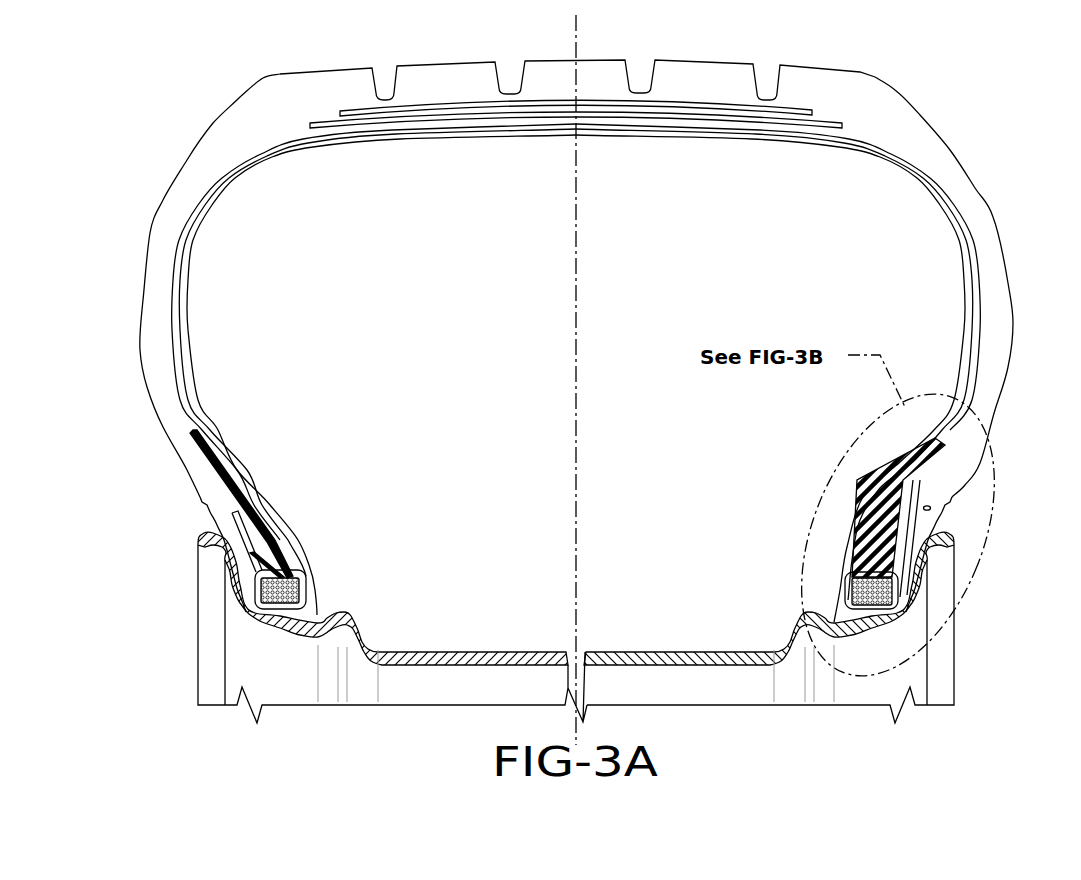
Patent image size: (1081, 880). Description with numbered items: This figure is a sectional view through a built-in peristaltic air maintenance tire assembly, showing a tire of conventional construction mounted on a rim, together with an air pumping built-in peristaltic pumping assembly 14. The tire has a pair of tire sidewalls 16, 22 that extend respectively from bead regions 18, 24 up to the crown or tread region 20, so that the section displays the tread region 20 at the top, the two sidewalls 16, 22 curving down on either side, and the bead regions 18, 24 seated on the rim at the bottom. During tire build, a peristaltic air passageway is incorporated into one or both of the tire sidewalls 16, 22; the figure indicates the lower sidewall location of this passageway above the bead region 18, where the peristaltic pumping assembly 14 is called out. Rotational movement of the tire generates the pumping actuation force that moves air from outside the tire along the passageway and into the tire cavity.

The peristaltic pumping assembly 14 is at (940, 498).
The tire sidewall 16 is at (1013, 320).
The bead region 18 is at (888, 592).
The tread region 20 is at (702, 62).
The tire sidewall 22 is at (141, 357).
The bead region 24 is at (270, 590).